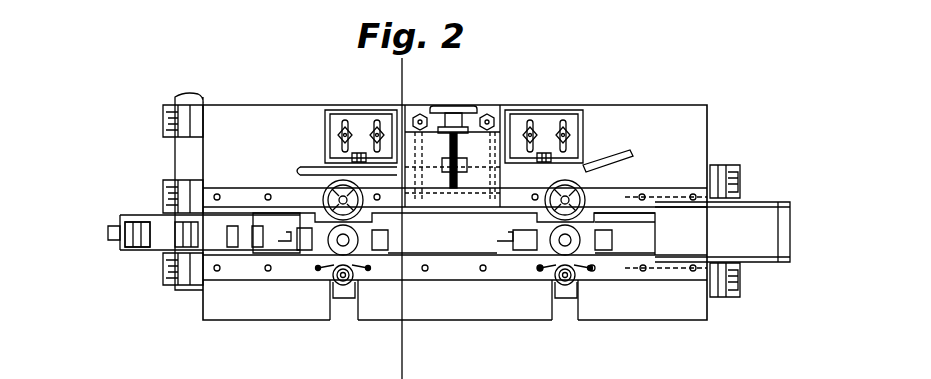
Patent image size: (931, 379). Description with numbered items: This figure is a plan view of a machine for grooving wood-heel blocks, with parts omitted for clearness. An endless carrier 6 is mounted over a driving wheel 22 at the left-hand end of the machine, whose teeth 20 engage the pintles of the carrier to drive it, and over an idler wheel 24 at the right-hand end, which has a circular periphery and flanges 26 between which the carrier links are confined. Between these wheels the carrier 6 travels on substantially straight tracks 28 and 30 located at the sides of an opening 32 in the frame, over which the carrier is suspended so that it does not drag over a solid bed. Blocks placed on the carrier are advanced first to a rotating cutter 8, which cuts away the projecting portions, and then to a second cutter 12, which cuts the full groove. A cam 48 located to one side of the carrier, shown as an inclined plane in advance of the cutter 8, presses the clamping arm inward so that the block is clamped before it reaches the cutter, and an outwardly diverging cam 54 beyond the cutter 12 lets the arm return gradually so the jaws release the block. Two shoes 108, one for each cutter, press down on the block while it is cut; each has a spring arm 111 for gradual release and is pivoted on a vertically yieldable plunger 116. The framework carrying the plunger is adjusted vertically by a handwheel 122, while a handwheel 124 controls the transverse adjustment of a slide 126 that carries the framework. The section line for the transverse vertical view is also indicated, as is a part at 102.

The endless carrier 6 is at (405, 76).
The rotating cutter 8 is at (563, 297).
The second cutter 12 is at (343, 297).
The teeth 20 is at (172, 238).
The driving wheel 22 is at (150, 252).
The idler wheel 24 is at (747, 214).
The flanges 26 is at (791, 258).
The track 28 is at (624, 206).
The track 30 is at (632, 257).
The opening 32 is at (549, 176).
The cam 48 is at (575, 166).
The outwardly diverging cam 54 is at (322, 130).
The hand wheel 102 is at (332, 186).
The shoe 108 is at (381, 252).
The spring arm 111 is at (283, 238).
The plunger 116 is at (338, 248).
The handwheel 122 is at (582, 191).
The handwheel 124 is at (470, 104).
The slide 126 is at (433, 157).